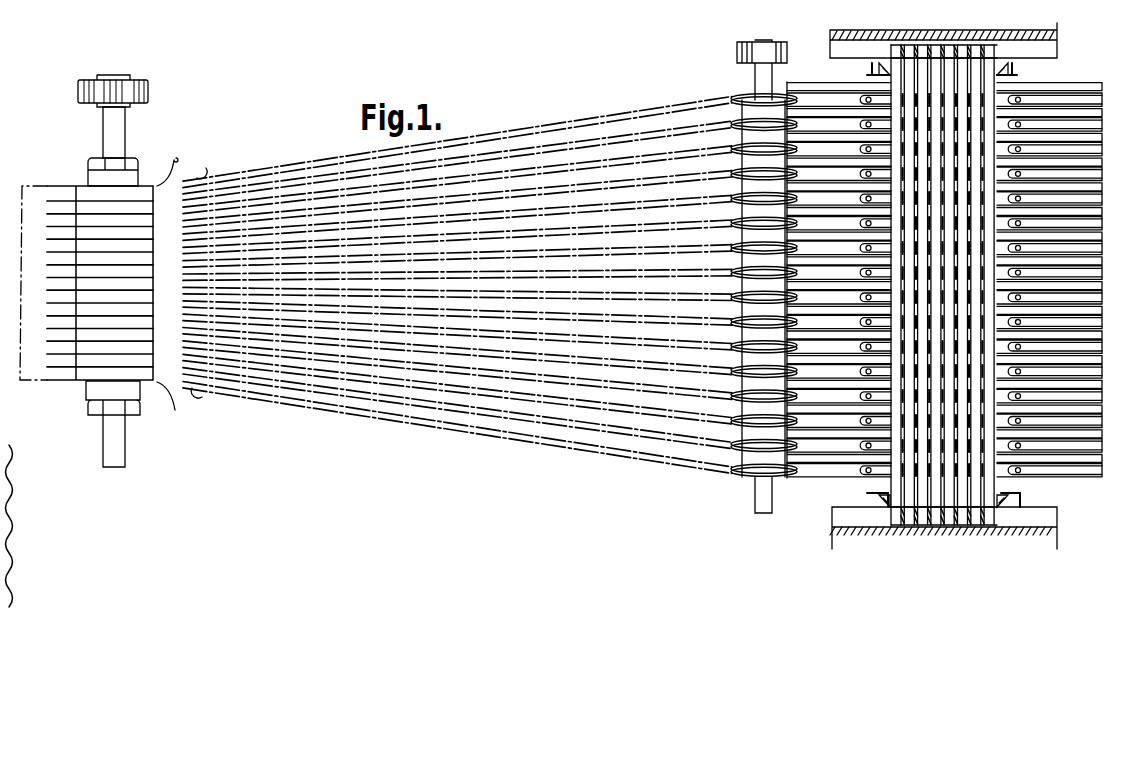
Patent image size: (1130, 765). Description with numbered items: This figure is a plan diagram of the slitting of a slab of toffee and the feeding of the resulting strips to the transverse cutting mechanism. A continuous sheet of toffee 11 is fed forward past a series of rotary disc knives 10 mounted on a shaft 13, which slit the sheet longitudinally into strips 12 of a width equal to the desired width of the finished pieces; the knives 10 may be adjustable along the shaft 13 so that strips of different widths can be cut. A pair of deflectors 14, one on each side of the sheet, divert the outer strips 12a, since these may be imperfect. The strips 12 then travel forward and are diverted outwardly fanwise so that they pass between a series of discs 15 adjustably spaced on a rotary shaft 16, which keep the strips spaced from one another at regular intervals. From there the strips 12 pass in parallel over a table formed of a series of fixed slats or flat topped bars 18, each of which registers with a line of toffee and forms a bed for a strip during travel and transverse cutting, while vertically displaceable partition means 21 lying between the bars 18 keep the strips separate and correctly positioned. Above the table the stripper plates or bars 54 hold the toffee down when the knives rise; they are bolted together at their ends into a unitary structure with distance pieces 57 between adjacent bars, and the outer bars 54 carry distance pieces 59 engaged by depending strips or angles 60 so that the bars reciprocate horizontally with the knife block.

The rotary disc knives 10 is at (63, 222).
The sheet of toffee 11 is at (33, 378).
The strips 12 is at (283, 212).
The outer strips 12a is at (178, 436).
The shaft 13 is at (118, 147).
The deflectors 14 is at (194, 394).
The discs 15 is at (732, 150).
The rotary shaft 16 is at (757, 487).
The fixed slats or flat topped bars 18 is at (820, 460).
The partition means 21 is at (1008, 148).
The stripper plates or bars 54 is at (920, 503).
The distance pieces 57 is at (947, 507).
The distance pieces 59 is at (1002, 503).
The depending strips or angles 60 is at (1020, 495).